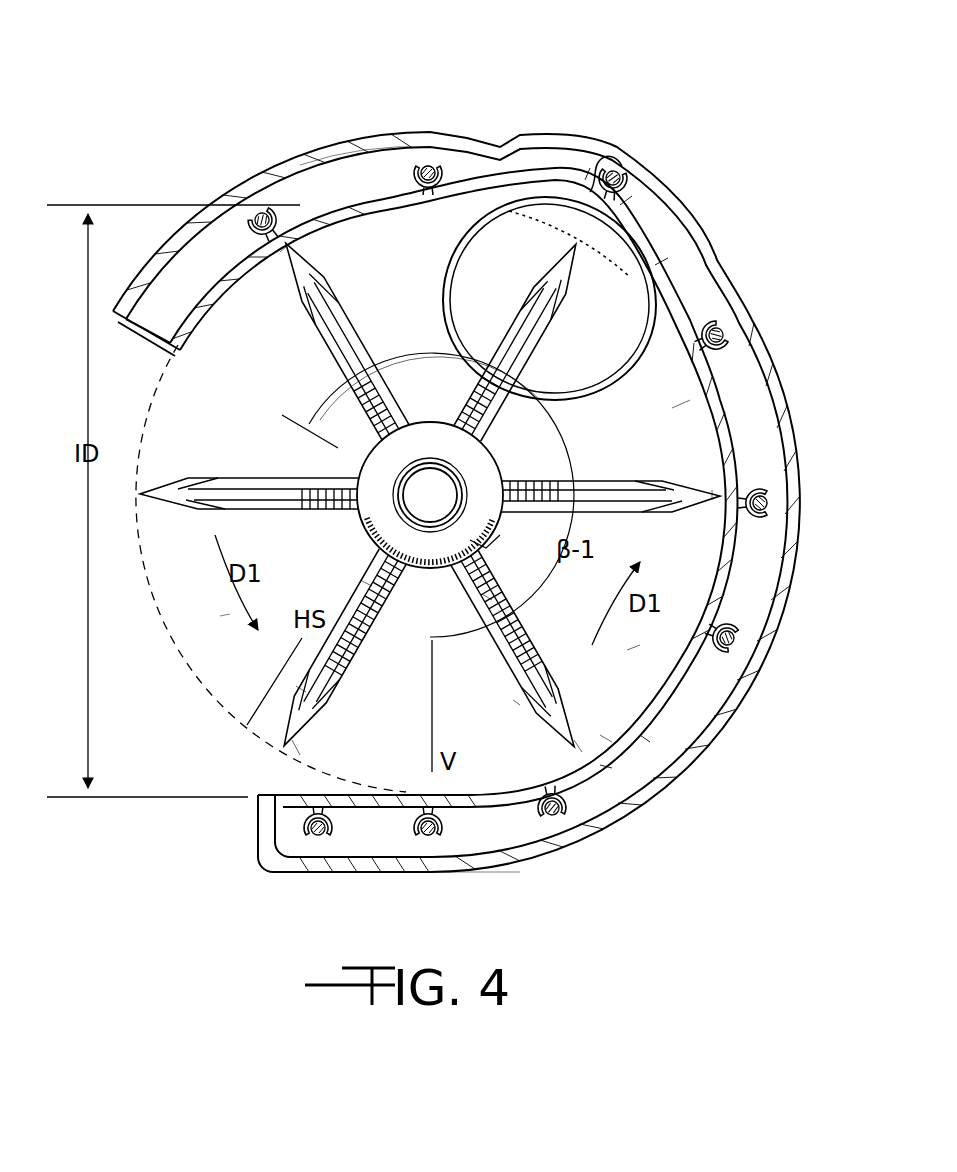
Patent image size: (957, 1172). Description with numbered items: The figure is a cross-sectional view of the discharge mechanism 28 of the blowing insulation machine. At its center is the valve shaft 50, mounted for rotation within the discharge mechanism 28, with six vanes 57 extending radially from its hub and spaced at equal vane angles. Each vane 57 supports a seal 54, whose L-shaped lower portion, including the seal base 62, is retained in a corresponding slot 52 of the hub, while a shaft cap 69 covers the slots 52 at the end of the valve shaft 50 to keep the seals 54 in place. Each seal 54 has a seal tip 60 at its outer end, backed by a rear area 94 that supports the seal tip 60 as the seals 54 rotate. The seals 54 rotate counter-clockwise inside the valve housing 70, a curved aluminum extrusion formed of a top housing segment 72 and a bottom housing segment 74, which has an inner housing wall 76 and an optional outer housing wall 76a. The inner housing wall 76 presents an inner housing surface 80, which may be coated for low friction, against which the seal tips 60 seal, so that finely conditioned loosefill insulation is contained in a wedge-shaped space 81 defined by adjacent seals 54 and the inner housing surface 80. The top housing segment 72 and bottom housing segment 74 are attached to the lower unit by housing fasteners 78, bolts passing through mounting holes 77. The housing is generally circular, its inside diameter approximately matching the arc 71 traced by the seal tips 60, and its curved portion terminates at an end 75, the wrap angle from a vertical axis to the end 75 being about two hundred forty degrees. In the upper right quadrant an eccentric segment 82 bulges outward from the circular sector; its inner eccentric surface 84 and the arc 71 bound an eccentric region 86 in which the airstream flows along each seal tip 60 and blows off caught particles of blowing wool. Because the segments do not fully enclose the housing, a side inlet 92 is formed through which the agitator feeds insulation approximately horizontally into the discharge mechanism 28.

The discharge mechanism 28 is at (258, 80).
The valve shaft 50 is at (493, 532).
The slots 52 is at (480, 548).
The seals 54 is at (290, 298).
The vanes 57 is at (366, 582).
The seal tip 60 is at (287, 245).
The seal base 62 is at (418, 568).
The shaft cap 69 is at (440, 408).
The valve housing 70 is at (482, 484).
The arc 71 is at (533, 218).
The top housing segment 72 is at (330, 145).
The bottom housing segment 74 is at (552, 858).
The end 75 is at (150, 348).
The inner housing wall 76 is at (650, 740).
The outer housing wall 76a is at (790, 573).
The mounting holes 77 is at (425, 165).
The housing fasteners 78 is at (432, 168).
The inner housing surface 80 is at (600, 735).
The wedge-shaped space 81 is at (680, 407).
The eccentric segment 82 is at (642, 232).
The inner eccentric surface 84 is at (640, 275).
The eccentric region 86 is at (600, 237).
The side inlet 92 is at (220, 616).
The rear area 94 is at (297, 688).